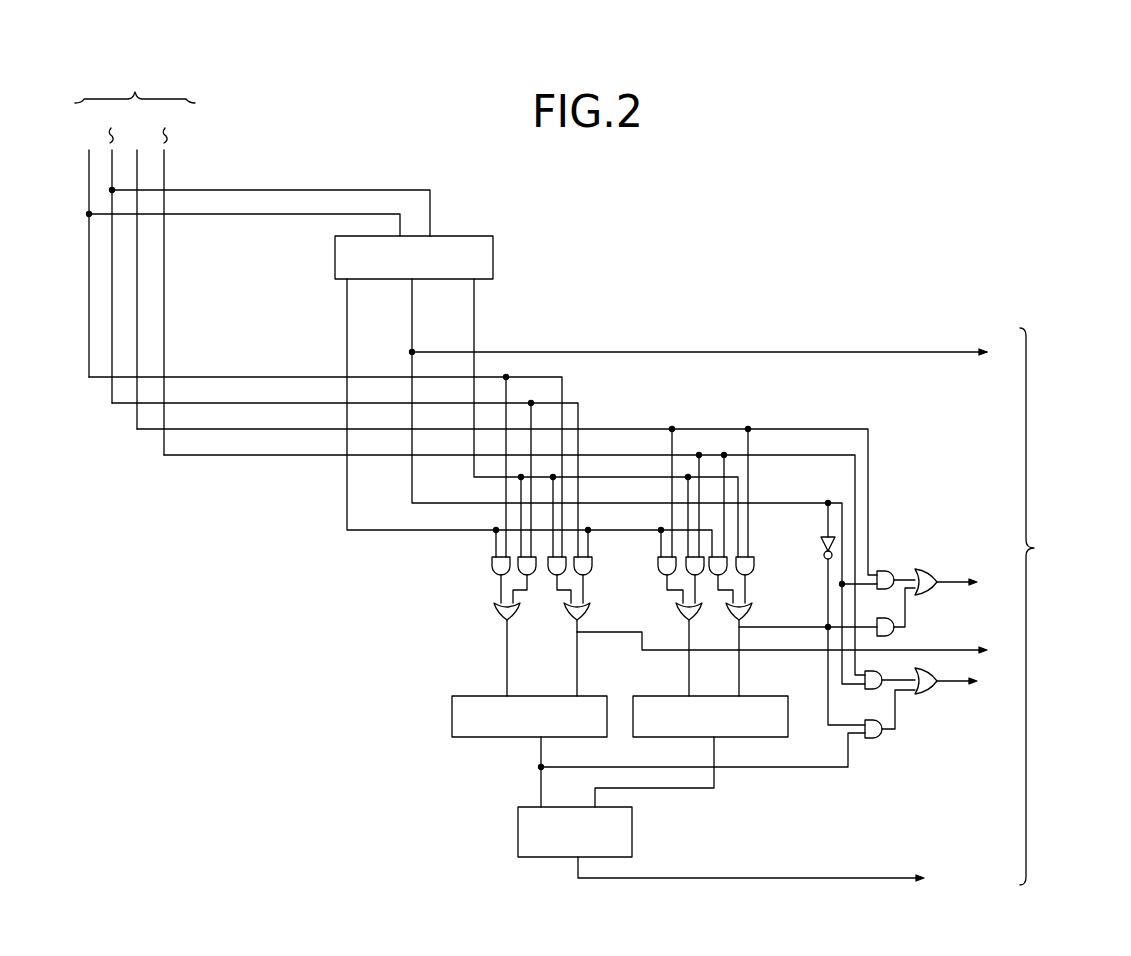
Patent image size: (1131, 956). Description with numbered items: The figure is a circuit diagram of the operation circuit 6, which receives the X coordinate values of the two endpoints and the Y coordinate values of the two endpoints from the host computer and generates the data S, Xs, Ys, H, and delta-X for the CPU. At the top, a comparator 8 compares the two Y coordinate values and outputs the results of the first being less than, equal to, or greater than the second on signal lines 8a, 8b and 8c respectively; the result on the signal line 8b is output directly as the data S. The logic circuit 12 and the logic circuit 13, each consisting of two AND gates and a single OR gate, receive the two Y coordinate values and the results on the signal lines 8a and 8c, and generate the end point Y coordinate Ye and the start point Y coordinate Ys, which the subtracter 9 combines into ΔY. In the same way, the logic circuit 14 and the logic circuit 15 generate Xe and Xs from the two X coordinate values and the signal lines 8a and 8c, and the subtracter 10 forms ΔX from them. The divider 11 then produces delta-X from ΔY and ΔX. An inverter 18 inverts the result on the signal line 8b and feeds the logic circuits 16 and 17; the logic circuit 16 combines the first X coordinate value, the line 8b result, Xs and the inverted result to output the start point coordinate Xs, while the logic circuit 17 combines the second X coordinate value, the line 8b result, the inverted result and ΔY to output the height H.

The operation circuit 6 is at (787, 182).
The comparator 8 is at (495, 262).
The signal line 8a is at (347, 312).
The signal line 8b is at (412, 312).
The signal line 8c is at (474, 338).
The subtracter 9 is at (497, 738).
The subtracter 10 is at (788, 725).
The divider 11 is at (632, 833).
The logic circuit 12 is at (492, 606).
The logic circuit 13 is at (562, 606).
The logic circuit 14 is at (672, 598).
The logic circuit 15 is at (722, 595).
The logic circuit 16 is at (895, 570).
The logic circuit 17 is at (906, 705).
The inverter 18 is at (820, 558).